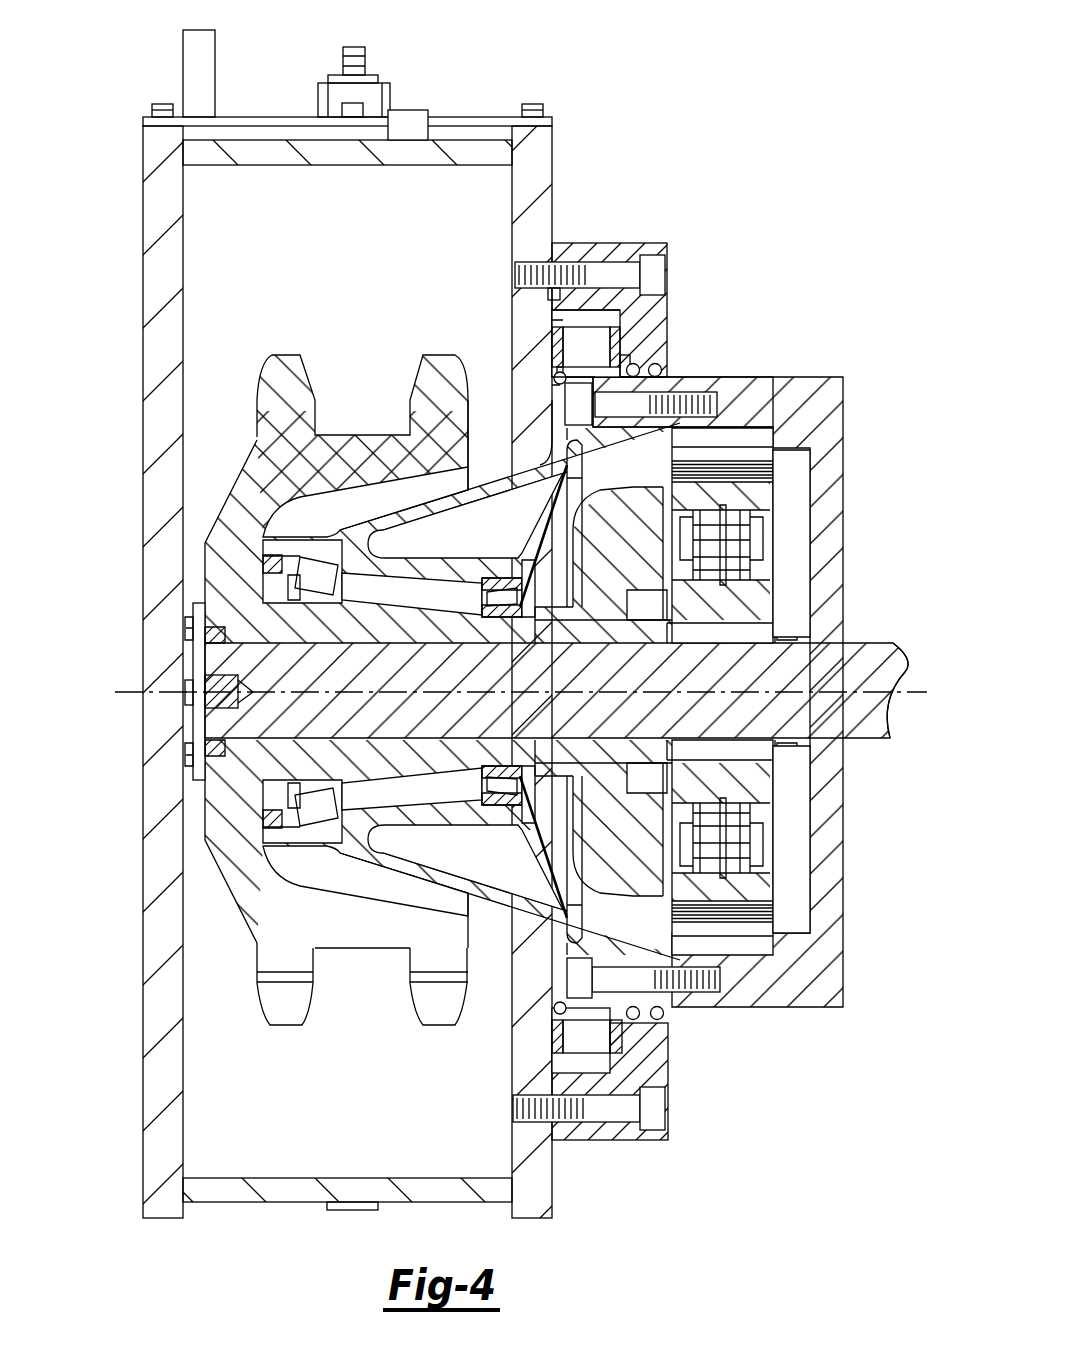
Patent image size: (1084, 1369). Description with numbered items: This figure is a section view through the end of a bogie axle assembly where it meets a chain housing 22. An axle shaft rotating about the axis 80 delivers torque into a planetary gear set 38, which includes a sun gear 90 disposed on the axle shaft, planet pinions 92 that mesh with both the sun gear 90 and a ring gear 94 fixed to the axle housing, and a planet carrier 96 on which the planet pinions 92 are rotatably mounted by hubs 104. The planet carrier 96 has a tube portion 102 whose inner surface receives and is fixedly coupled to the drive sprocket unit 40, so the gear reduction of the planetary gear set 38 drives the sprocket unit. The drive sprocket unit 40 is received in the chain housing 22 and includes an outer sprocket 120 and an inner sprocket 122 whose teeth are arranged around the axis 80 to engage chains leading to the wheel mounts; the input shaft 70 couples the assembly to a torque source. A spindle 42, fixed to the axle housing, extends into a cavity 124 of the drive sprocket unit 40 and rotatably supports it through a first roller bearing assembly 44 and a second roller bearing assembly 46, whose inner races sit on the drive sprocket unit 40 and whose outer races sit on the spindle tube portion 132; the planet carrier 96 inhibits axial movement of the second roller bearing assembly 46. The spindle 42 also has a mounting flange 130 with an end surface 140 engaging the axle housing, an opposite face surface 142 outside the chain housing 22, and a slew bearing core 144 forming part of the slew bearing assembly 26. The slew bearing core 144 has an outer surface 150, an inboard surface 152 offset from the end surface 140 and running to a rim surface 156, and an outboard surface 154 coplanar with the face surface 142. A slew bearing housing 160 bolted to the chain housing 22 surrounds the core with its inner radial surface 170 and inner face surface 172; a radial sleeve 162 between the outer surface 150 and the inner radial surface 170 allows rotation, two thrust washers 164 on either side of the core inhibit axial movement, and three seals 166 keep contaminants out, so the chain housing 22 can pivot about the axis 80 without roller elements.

The chain housing 22 is at (143, 345).
The slew bearing assembly 26 is at (593, 622).
The planetary gear set 38 is at (788, 635).
The drive sprocket unit 40 is at (235, 902).
The spindle 42 is at (447, 731).
The first roller bearing assembly 44 is at (302, 805).
The second roller bearing assembly 46 is at (492, 822).
The input shaft 70 is at (905, 672).
The axis 80 is at (557, 654).
The sun gear 90 is at (757, 605).
The planet pinions 92 is at (815, 478).
The ring gear 94 is at (737, 680).
The planet carrier 96 is at (617, 897).
The tube portion 102 is at (560, 572).
The hub 104 is at (745, 545).
The outer sprocket 120 is at (277, 1005).
The inner sprocket 122 is at (440, 1005).
The cavity 124 is at (452, 553).
The mounting flange 130 is at (565, 470).
The spindle tube portion 132 is at (375, 762).
The end surface 140 is at (683, 402).
The face surface 142 is at (553, 428).
The slew bearing core 144 is at (586, 690).
The outer surface 150 is at (592, 290).
The inboard surface 152 is at (556, 383).
The outboard surface 154 is at (556, 345).
The rim surface 156 is at (642, 690).
The slew bearing housing 160 is at (593, 655).
The radial sleeve 162 is at (552, 328).
The thrust washer 164 is at (560, 368).
The seal 166 is at (662, 372).
The inner radial surface 170 is at (552, 290).
The inner face surface 172 is at (618, 338).